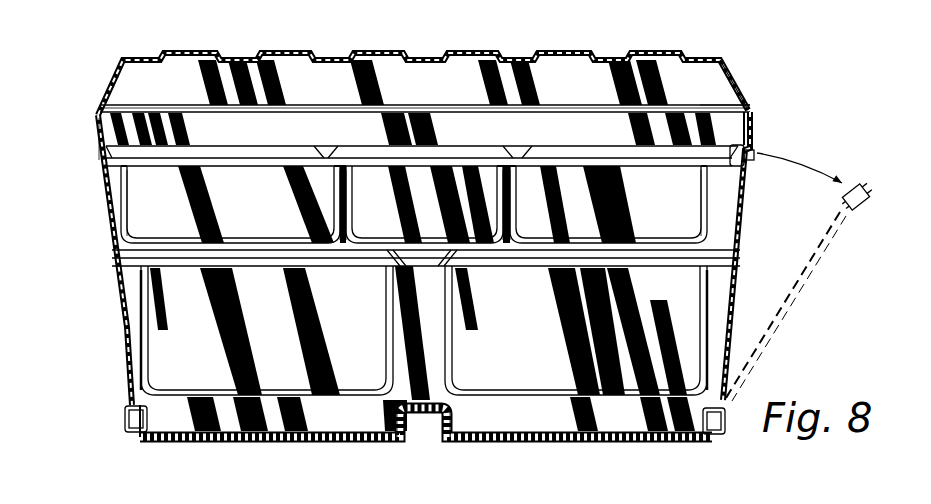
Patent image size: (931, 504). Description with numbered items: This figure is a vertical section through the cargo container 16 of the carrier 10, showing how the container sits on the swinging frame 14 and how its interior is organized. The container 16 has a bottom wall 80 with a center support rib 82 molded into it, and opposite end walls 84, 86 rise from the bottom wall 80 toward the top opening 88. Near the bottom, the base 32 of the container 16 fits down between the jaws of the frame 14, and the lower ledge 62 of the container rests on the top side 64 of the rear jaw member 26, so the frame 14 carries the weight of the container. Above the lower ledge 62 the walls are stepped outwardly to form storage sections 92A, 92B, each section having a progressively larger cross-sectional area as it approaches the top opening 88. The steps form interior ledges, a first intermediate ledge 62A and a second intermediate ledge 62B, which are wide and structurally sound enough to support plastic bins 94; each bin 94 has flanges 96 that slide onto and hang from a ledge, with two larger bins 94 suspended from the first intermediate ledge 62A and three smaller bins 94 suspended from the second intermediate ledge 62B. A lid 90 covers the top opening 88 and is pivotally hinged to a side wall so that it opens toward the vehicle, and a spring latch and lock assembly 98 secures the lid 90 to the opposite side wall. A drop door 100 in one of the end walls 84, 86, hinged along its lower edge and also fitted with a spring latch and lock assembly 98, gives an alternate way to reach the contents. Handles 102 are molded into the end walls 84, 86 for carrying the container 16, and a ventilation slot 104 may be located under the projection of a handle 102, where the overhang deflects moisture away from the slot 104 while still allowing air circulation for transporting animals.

The carrier 10 is at (124, 47).
The cargo container 16 is at (120, 61).
The end wall 84 is at (100, 133).
The handle 102 is at (97, 118).
The second intermediate ledge 62B is at (103, 150).
The flange 96 is at (135, 182).
The storage section 92B is at (163, 203).
The ventilation slot 104 is at (158, 218).
The plastic bin 94 is at (351, 158).
The first intermediate ledge 62A is at (122, 292).
The storage section 92A is at (118, 299).
The lower ledge 62 is at (143, 390).
The base 32 is at (134, 403).
The top side of rear jaw member 64 is at (122, 406).
The swinging frame 14 is at (121, 417).
The rear jaw member 26 is at (124, 429).
The center support rib 82 is at (432, 428).
The bottom wall 80 is at (405, 440).
The top opening 88 is at (735, 83).
The lid 90 is at (712, 108).
The end wall 86 is at (753, 132).
The spring latch and lock assembly 98 is at (753, 148).
The drop door 100 is at (767, 313).